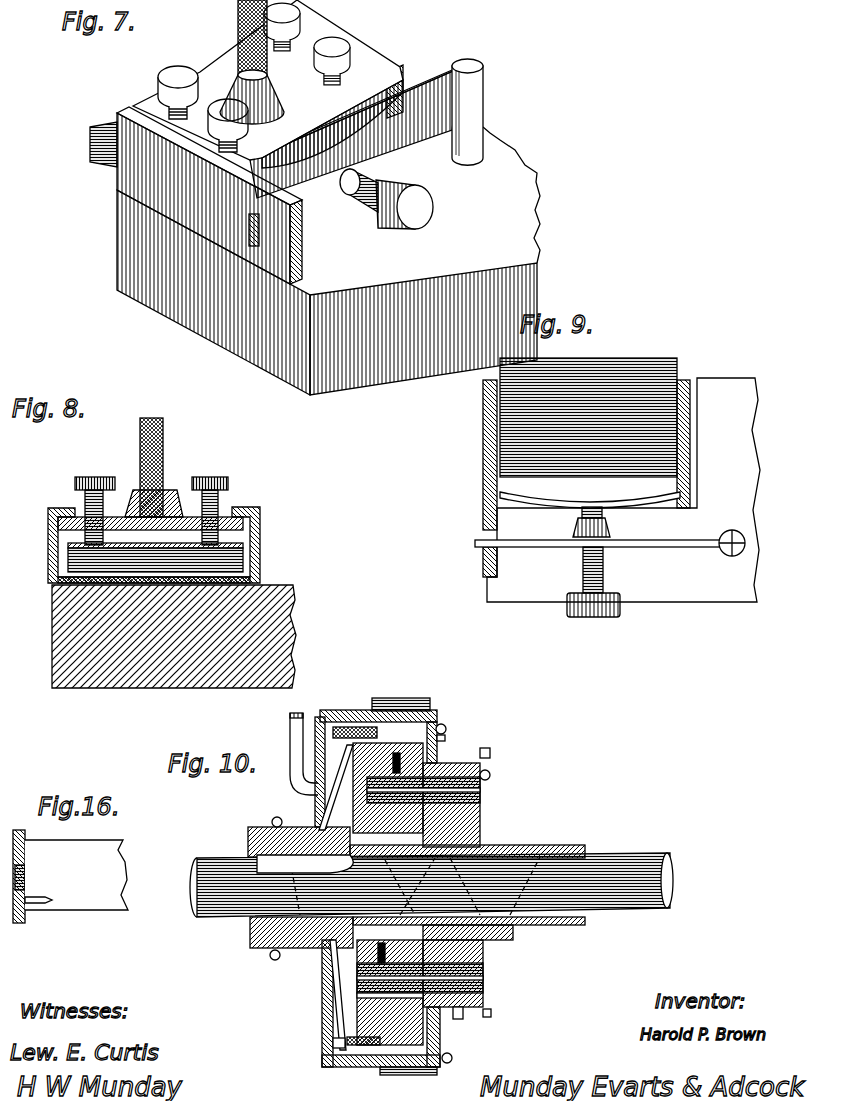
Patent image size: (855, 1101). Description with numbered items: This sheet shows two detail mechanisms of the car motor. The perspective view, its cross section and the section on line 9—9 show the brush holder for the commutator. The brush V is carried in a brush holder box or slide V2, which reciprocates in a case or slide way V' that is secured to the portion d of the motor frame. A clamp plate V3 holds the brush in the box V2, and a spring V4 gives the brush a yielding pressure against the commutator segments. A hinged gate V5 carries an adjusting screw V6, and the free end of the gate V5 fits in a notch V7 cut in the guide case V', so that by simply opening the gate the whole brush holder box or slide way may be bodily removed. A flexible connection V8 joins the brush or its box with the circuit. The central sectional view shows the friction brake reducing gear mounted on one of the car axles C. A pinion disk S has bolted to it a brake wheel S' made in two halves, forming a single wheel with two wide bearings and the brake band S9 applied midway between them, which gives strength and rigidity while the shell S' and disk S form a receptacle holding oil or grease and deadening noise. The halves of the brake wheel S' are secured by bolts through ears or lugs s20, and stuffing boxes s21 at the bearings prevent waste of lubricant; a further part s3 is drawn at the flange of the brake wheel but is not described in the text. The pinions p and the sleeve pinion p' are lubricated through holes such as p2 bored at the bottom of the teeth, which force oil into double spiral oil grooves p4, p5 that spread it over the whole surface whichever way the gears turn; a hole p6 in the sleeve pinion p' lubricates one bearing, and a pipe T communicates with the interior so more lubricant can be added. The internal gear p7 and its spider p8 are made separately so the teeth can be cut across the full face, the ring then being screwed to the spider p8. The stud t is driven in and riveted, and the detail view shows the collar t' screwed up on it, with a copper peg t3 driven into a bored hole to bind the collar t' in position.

In FIG. 7, the brush V is at (81, 144).
In FIG. 9, the brush V is at (572, 407).
In FIG. 7, the case or slide way V' is at (209, 195).
In FIG. 8, the case or slide way V' is at (181, 541).
In FIG. 9, the case or slide way V' is at (461, 478).
In FIG. 7, the brush holder box V2 is at (268, 80).
In FIG. 8, the brush holder box V2 is at (233, 517).
In FIG. 9, the brush holder box V2 is at (683, 453).
In FIG. 8, the clamp plate V3 is at (157, 543).
In FIG. 7, the spring V4 is at (332, 130).
In FIG. 9, the spring V4 is at (552, 505).
In FIG. 7, the hinged gate V5 is at (358, 136).
In FIG. 9, the hinged gate V5 is at (568, 548).
In FIG. 7, the adjusting screw V6 is at (386, 199).
In FIG. 9, the adjusting screw V6 is at (592, 618).
In FIG. 7, the notch V7 is at (262, 241).
In FIG. 8, the flexible connection V8 is at (160, 418).
In FIG. 8, the section line 9— 9 is at (48, 545).
In FIG. 7, the portion of the motor frame d is at (328, 261).
In FIG. 8, the portion of the motor frame d is at (296, 618).
In FIG. 9, the portion of the motor frame d is at (623, 490).
In FIG. 10, the car axle C is at (431, 885).
In FIG. 10, the pinion disk S is at (501, 758).
In FIG. 10, the brake wheel S' is at (481, 850).
In FIG. 10, the brake band S9 is at (400, 697).
In FIG. 10, the ears or lugs s20 is at (447, 729).
In FIG. 10, the stuffing boxes s21 is at (250, 932).
In FIG. 10, the flange s3 is at (255, 830).
In FIG. 10, the pipe T is at (290, 728).
In FIG. 16, the stud t is at (76, 875).
In FIG. 10, the stud t is at (440, 877).
In FIG. 16, the collar t' is at (31, 871).
In FIG. 10, the collar t' is at (291, 1040).
In FIG. 16, the copper peg t3 is at (37, 903).
In FIG. 10, the pinions p is at (425, 857).
In FIG. 10, the sleeve pinion p' is at (308, 897).
In FIG. 10, the hole p2 is at (357, 985).
In FIG. 10, the double spiral oil groove p4 is at (527, 857).
In FIG. 10, the double spiral oil groove p5 is at (450, 735).
In FIG. 10, the hole p6 is at (483, 828).
In FIG. 10, the internal gear p7 is at (440, 1040).
In FIG. 10, the spider p8 is at (337, 793).